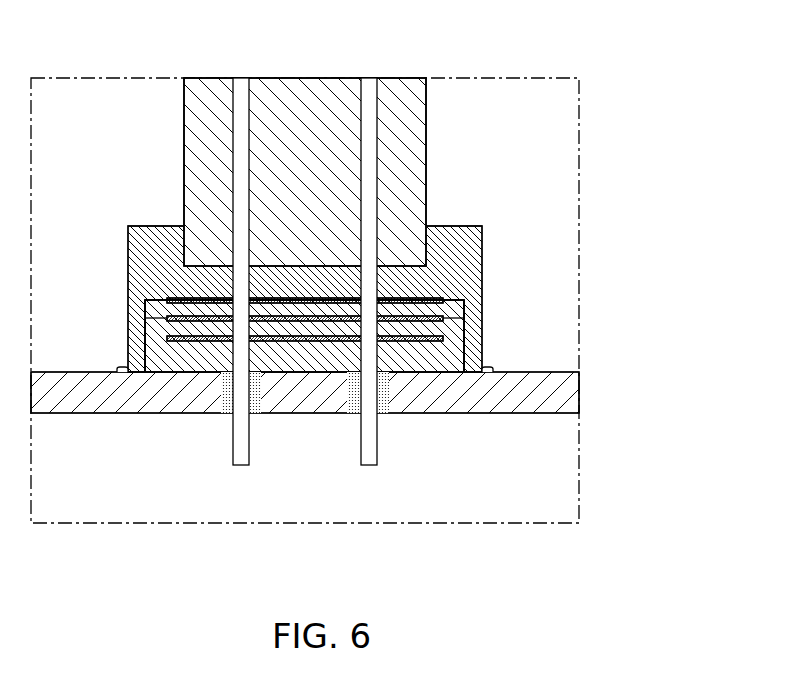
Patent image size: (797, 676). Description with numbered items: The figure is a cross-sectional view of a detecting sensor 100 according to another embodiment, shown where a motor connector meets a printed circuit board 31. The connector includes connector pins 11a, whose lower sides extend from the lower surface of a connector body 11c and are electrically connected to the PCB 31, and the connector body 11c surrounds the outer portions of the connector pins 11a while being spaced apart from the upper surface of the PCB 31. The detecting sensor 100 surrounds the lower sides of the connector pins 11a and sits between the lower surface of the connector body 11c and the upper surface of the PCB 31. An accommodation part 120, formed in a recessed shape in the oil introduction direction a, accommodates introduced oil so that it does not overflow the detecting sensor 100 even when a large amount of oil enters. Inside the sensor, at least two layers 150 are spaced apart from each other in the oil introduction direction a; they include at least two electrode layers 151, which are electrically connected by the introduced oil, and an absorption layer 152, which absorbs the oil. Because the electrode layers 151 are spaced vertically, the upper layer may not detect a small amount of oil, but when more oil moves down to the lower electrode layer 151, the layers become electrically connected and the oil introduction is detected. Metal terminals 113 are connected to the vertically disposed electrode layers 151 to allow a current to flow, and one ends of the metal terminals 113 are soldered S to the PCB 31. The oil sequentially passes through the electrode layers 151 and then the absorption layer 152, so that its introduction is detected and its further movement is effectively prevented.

The connector pin 11a is at (371, 127).
The connector body 11c is at (402, 171).
The accommodation part 120 is at (468, 245).
The detecting sensor 100 is at (482, 280).
The layers 150 is at (452, 338).
The electrode layer 151 is at (443, 300).
The absorption layer 152 is at (482, 340).
The printed circuit board 31 is at (574, 395).
The metal terminal 113 is at (143, 342).
The soldering S is at (118, 373).
The oil introduction direction a is at (225, 218).